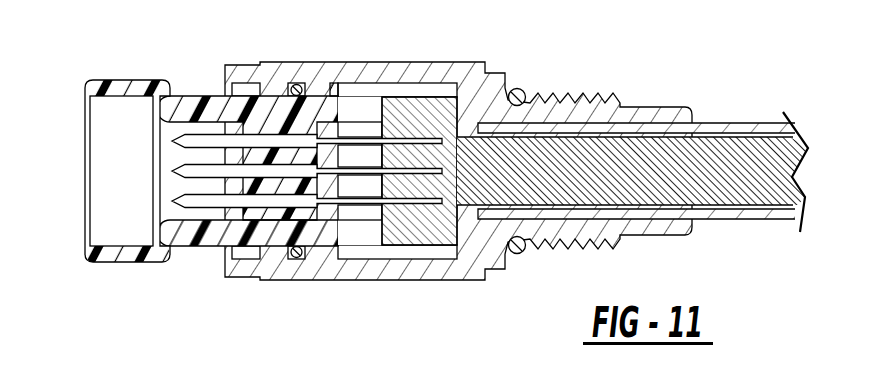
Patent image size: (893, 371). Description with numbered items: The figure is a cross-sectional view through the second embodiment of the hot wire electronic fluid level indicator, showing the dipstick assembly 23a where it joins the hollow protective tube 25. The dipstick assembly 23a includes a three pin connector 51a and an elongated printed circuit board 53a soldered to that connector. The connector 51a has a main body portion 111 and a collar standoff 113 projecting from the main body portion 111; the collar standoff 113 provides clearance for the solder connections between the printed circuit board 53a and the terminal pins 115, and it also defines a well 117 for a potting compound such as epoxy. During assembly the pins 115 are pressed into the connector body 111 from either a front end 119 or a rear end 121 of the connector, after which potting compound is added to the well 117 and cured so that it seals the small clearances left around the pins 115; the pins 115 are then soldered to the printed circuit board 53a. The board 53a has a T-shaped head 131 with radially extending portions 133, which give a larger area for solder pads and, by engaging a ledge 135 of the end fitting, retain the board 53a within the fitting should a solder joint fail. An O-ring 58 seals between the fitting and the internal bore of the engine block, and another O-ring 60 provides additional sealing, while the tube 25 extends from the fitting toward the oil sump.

The dipstick assembly 23a is at (64, 170).
The front end 119 is at (110, 152).
The three pin connector 51a is at (128, 259).
The main body portion 111 is at (320, 96).
The O-ring 60 is at (297, 259).
The collar standoff 113 is at (355, 126).
The well 117 is at (352, 118).
The rear end 121 is at (379, 134).
The radially extending portions 133 is at (411, 106).
The T-shaped head 131 is at (388, 238).
The ledge 135 is at (447, 218).
The terminal pins 115 is at (402, 112).
The O-ring 58 is at (520, 92).
The printed circuit board 53a is at (733, 168).
The hollow protective tube 25 is at (766, 219).